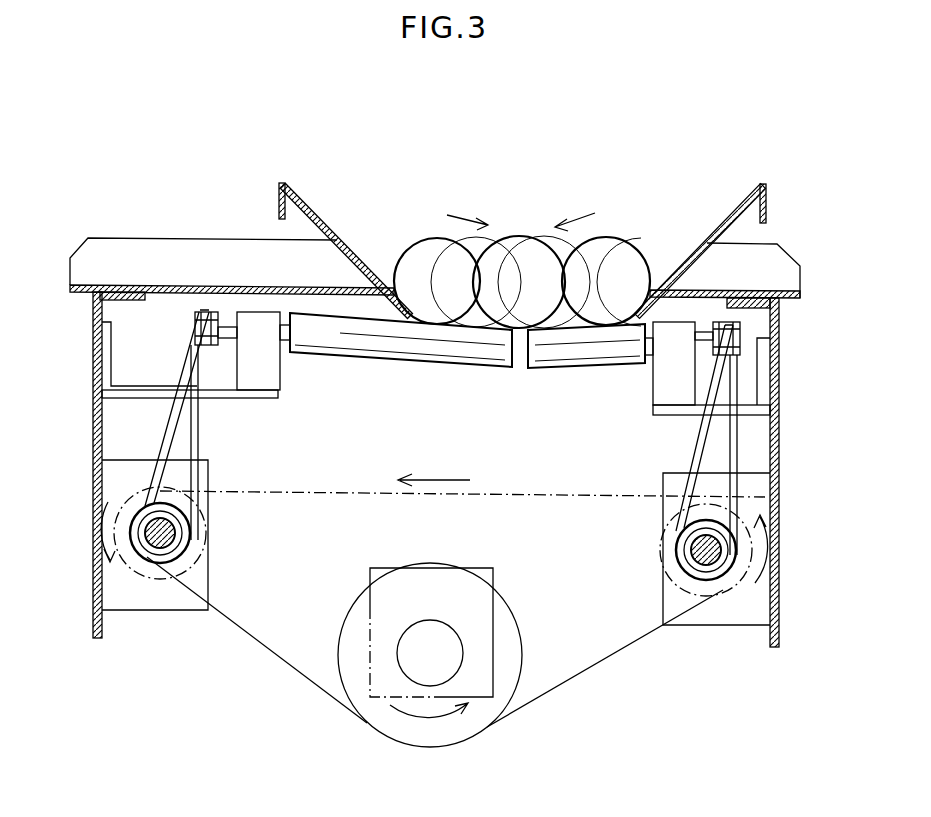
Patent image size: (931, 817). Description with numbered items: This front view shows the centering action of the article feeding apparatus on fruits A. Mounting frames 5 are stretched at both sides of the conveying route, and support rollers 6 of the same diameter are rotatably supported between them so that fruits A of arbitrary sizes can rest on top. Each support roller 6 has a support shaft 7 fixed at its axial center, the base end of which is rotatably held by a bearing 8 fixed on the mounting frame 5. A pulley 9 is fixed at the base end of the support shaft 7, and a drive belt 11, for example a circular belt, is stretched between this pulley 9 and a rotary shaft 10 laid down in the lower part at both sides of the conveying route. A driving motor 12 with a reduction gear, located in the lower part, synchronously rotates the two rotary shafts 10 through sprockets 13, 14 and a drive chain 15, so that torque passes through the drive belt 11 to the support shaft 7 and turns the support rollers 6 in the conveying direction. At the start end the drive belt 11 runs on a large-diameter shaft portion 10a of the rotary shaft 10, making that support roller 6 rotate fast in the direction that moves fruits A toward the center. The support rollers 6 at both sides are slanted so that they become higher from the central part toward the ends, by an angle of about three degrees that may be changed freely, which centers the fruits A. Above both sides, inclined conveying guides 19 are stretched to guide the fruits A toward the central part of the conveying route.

The mounting frame 5 is at (106, 362).
The support roller 6 is at (556, 382).
The support shaft 7 is at (228, 333).
The bearing 8 is at (265, 368).
The pulley 9 is at (192, 333).
The rotary shaft 10 is at (152, 550).
The large-diameter shaft portion 10a is at (125, 495).
The drive belt 11 is at (160, 433).
The driving motor 12 is at (370, 608).
The sprocket 13 is at (523, 667).
The sprocket 14 is at (172, 580).
The drive chain 15 is at (567, 683).
The conveying guide 19 is at (329, 232).
The fruit A is at (452, 248).